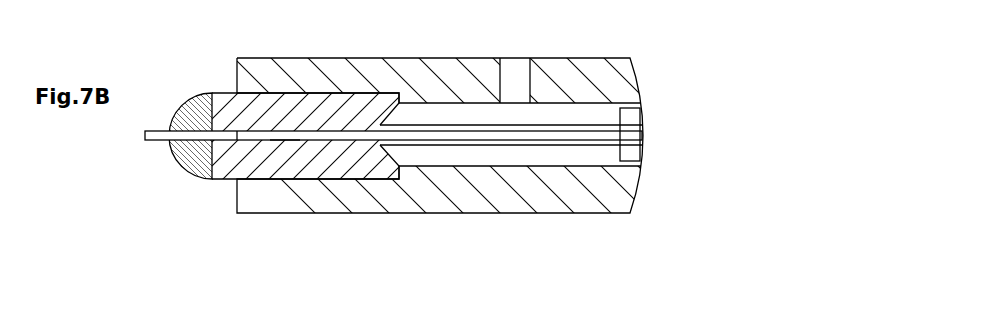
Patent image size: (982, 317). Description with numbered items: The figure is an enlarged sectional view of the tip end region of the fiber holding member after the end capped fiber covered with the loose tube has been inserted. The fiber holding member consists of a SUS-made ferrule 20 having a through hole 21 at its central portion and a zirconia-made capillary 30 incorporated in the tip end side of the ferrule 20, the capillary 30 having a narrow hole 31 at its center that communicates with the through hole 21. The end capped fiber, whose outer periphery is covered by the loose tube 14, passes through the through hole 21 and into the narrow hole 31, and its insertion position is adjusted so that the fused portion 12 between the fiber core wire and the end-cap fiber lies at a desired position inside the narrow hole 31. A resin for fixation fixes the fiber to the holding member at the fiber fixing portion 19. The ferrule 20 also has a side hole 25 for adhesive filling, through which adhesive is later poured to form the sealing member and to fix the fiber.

The fused portion 12 is at (393, 206).
The loose tube 14 is at (666, 130).
The fiber fixing portion 19 is at (190, 112).
The ferrule 20 is at (514, 110).
The through hole 21 is at (524, 188).
The side hole for adhesive filling 25 is at (532, 51).
The capillary 30 is at (325, 171).
The narrow hole 31 is at (293, 213).